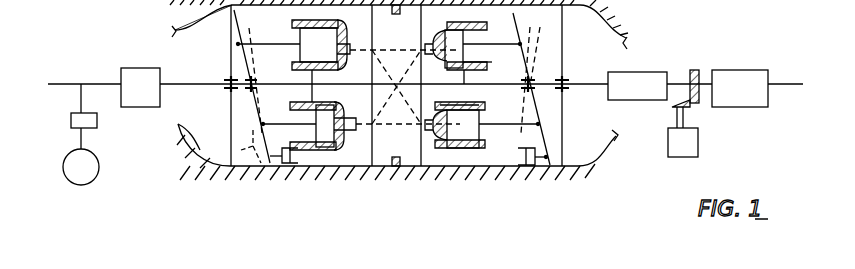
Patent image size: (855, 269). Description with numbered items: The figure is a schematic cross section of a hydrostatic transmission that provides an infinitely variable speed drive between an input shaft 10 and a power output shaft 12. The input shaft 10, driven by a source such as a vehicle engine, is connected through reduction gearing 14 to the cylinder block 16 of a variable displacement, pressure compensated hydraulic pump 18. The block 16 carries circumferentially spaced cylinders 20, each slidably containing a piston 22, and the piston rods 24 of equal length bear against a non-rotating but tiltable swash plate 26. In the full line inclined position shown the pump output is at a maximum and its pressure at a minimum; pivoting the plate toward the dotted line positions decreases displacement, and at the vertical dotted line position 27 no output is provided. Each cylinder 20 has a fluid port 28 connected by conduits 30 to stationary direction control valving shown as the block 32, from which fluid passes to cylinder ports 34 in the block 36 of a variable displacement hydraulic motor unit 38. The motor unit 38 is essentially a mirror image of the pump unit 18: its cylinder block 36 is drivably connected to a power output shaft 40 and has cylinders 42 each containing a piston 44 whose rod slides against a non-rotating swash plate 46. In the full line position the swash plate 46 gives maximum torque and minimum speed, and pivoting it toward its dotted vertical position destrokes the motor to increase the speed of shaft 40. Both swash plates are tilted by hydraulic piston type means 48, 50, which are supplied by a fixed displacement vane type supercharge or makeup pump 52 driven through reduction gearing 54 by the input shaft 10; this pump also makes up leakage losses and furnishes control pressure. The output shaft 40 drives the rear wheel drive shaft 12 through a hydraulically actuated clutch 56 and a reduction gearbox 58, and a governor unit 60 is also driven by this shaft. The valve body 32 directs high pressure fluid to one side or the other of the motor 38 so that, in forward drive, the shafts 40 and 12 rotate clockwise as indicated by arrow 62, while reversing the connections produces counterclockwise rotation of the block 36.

The input shaft 10 is at (95, 84).
The power output shaft 12 is at (790, 86).
The reduction gearing 14 is at (134, 68).
The cylinder block 16 is at (331, 62).
The hydraulic pump 18 is at (290, 14).
The cylinders 20 is at (295, 24).
The piston 22 is at (298, 111).
The piston rods 24 is at (278, 44).
The swash plate 26 is at (231, 26).
The vertical dotted line position 27 is at (252, 87).
The fluid port 28 is at (333, 47).
The conduits 30 is at (360, 70).
The direction control valving 32 is at (410, 166).
The cylinder ports 34 is at (443, 60).
The cylinder block 36 is at (468, 70).
The hydraulic motor unit 38 is at (602, 24).
The power output shaft 40 is at (588, 84).
The cylinders 42 is at (470, 30).
The piston 44 is at (490, 62).
The swash plate 46 is at (582, 12).
The hydraulic piston type means 48 is at (298, 156).
The hydraulic piston type means 50 is at (516, 158).
The supercharge or makeup pump 52 is at (94, 153).
The reduction gearing 54 is at (72, 127).
The clutch 56 is at (630, 100).
The reduction gearbox 58 is at (748, 70).
The governor unit 60 is at (698, 130).
The arrow 62 is at (55, 100).